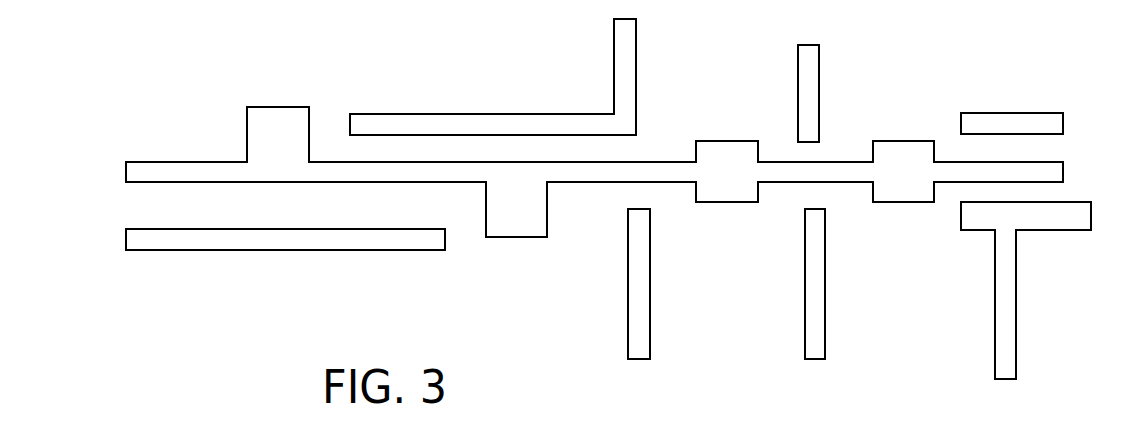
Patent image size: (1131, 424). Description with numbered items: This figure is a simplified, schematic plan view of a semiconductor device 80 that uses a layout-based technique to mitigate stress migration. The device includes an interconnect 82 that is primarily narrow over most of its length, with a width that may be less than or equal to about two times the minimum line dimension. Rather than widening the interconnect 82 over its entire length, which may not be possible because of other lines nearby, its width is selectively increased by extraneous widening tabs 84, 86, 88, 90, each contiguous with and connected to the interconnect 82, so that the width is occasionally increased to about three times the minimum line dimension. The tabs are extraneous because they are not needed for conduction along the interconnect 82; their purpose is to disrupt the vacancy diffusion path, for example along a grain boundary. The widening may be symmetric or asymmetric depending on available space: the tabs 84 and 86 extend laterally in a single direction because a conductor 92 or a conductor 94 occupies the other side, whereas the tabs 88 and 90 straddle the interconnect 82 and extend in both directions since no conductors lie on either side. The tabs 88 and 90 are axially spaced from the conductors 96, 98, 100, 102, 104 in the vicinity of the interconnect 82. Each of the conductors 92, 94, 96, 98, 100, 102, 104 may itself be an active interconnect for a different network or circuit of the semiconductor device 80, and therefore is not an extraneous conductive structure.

The semiconductor device 80 is at (891, 56).
The interconnect 82 is at (1052, 162).
The widening tab 84 is at (280, 107).
The widening tab 86 is at (513, 237).
The widening tab 88 is at (727, 141).
The widening tab 90 is at (903, 141).
The conductor 92 is at (349, 250).
The conductor 94 is at (512, 114).
The conductor 96 is at (628, 315).
The conductor 98 is at (805, 315).
The conductor 100 is at (798, 68).
The conductor 102 is at (1017, 113).
The conductor 104 is at (1062, 230).